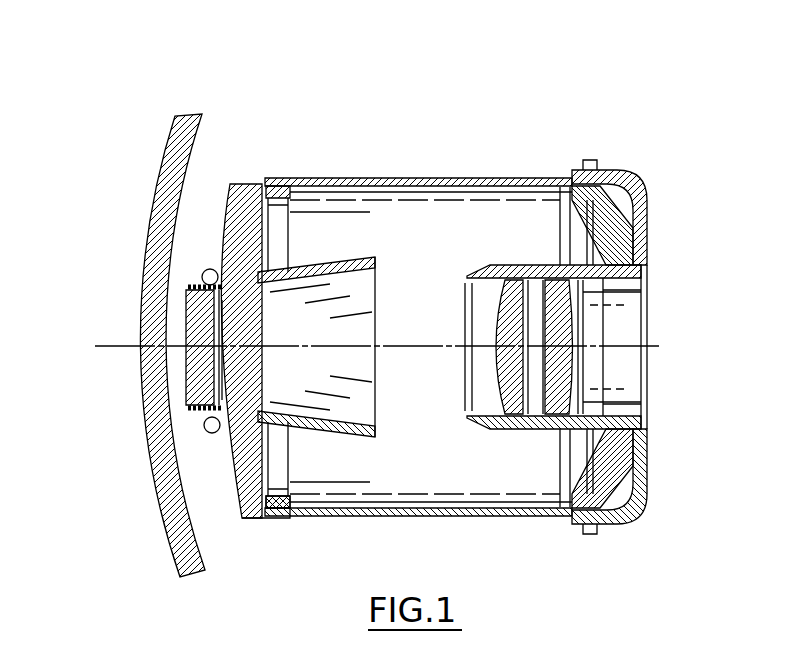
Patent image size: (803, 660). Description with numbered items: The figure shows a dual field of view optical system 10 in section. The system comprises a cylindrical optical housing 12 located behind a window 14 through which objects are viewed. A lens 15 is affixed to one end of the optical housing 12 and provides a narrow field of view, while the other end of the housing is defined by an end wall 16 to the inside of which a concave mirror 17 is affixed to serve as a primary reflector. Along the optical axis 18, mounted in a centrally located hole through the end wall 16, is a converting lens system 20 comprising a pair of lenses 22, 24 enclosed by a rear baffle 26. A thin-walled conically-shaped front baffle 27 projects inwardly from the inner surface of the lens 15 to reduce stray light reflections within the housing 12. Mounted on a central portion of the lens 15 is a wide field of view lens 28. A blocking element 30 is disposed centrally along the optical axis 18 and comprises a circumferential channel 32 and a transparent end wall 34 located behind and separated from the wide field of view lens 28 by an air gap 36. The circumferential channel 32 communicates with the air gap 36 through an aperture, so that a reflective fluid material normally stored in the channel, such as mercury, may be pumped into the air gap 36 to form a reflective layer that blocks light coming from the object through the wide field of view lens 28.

The dual field of view optical system 10 is at (575, 55).
The cylindrical optical housing 12 is at (328, 178).
The window 14 is at (148, 471).
The lens 15 is at (232, 198).
The end wall 16 is at (633, 176).
The concave mirror 17 is at (635, 218).
The optical axis 18 is at (95, 346).
The converting lens system 20 is at (484, 438).
The lens 22 is at (520, 270).
The lens 24 is at (600, 316).
The rear baffle 26 is at (492, 420).
The conically-shaped front baffle 27 is at (365, 257).
The wide field of view lens 28 is at (188, 386).
The blocking element 30 is at (193, 437).
The circumferential channel 32 is at (208, 268).
The transparent end wall 34 is at (284, 514).
The air gap 36 is at (213, 313).